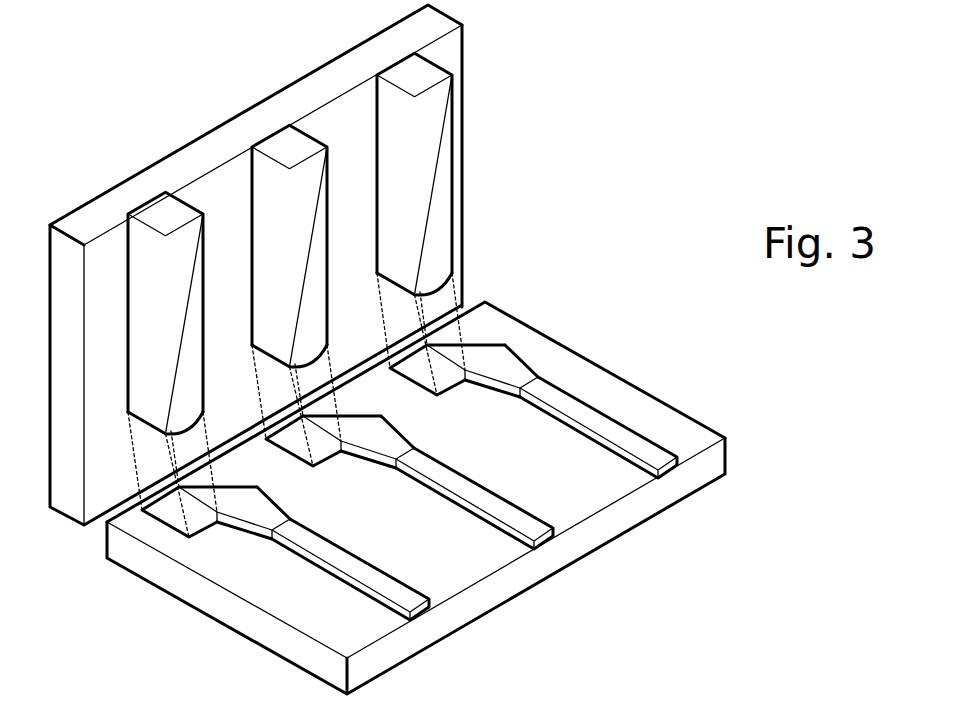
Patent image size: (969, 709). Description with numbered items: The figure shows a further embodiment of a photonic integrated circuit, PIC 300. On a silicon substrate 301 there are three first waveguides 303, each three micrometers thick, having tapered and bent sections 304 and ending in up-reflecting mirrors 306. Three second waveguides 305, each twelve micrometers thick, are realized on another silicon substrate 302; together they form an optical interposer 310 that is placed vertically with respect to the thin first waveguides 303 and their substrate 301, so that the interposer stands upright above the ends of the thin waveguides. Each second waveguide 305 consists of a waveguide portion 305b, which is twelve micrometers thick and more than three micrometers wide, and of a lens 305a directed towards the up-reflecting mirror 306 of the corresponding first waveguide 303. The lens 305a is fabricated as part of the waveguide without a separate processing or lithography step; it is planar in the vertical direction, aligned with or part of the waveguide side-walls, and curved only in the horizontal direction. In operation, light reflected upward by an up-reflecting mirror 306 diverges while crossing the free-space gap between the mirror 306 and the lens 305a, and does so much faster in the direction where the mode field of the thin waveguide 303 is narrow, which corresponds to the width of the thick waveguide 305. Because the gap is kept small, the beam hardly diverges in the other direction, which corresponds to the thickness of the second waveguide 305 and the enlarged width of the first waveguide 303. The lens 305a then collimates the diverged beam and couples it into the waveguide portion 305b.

The PIC 300 is at (713, 403).
The silicon substrate 301 is at (285, 638).
The silicon substrate 302 is at (102, 210).
The first waveguides 303 is at (637, 440).
The tapered trace section 304 is at (487, 346).
The second waveguides 305 is at (375, 83).
The lens 305a is at (335, 357).
The waveguide portion 305b is at (300, 250).
The up-reflecting mirror 306 is at (412, 378).
The optical interposer 310 is at (477, 85).